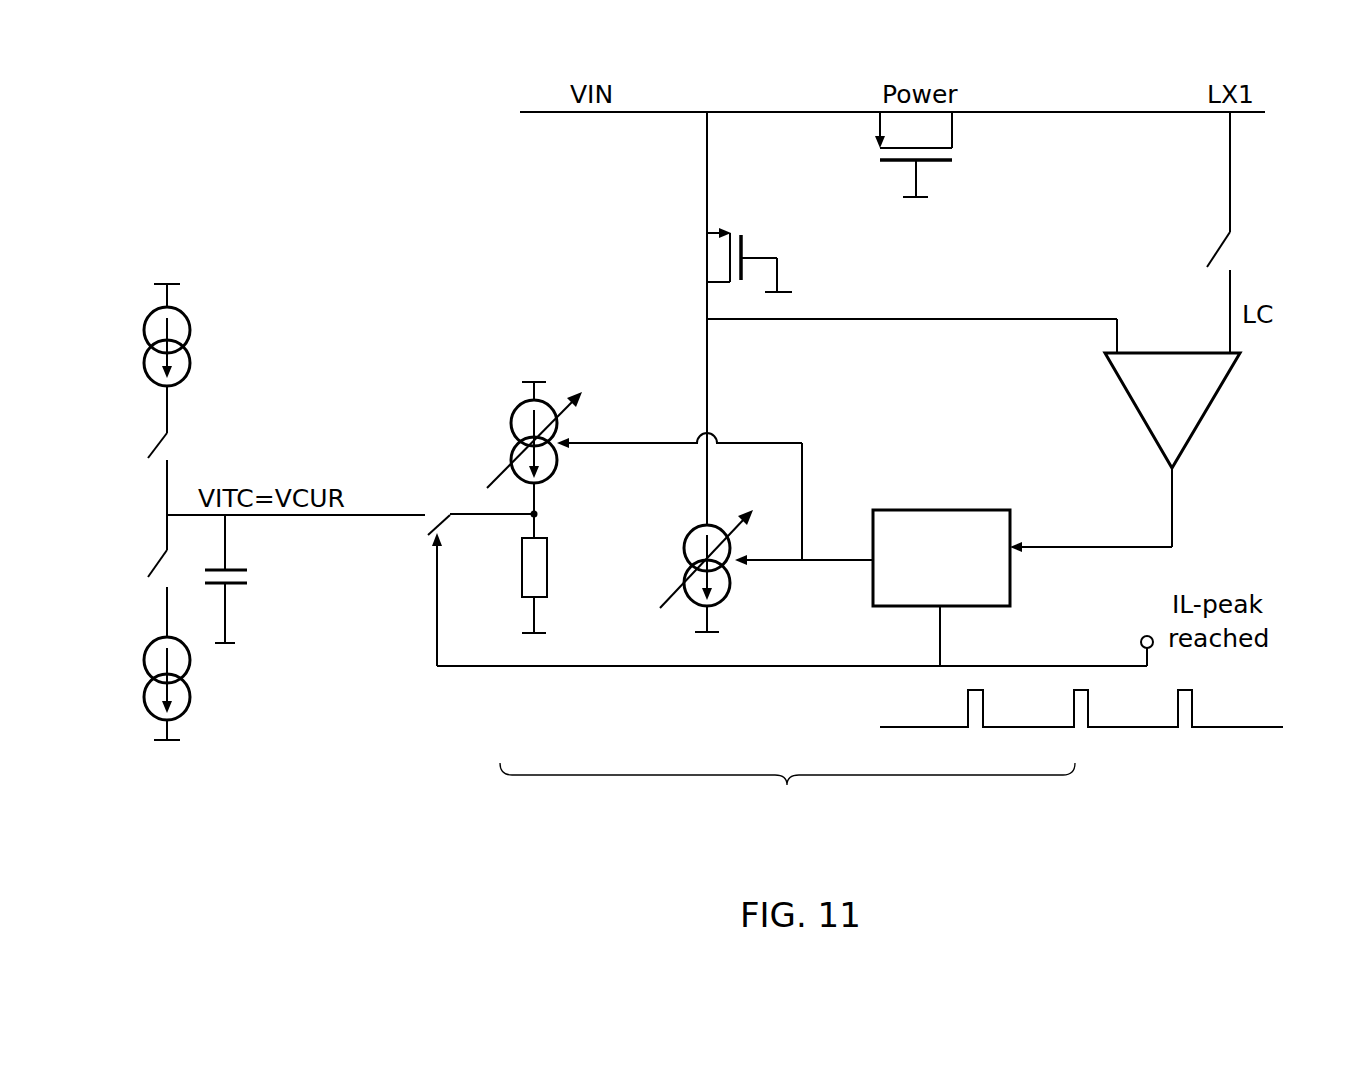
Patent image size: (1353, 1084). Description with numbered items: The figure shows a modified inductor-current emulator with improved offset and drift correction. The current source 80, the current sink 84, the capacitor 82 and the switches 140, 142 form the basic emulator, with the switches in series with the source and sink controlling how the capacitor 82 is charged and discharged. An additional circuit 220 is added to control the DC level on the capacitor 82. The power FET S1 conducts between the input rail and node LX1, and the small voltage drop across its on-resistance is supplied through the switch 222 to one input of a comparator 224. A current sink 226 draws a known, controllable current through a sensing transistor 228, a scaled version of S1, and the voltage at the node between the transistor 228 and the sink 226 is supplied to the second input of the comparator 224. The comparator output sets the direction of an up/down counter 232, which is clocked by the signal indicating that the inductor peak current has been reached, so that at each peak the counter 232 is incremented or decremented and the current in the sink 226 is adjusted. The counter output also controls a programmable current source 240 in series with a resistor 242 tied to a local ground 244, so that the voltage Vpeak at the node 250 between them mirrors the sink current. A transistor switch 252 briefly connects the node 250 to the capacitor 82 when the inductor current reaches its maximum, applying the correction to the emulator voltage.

The current source 80 is at (190, 332).
The switch 140 is at (155, 443).
The switch 142 is at (155, 560).
The capacitor 82 is at (247, 577).
The current sink 84 is at (190, 695).
The transistor switch 252 is at (436, 510).
The node 250 is at (527, 520).
The programmable current source 240 is at (512, 421).
The resistor 242 is at (522, 574).
The local ground 244 is at (534, 636).
The current sink 226 is at (690, 600).
The sensing transistor 228 is at (748, 237).
The up/down counter 232 is at (940, 508).
The comparator 224 is at (1213, 405).
The switch 222 is at (1238, 253).
The additional circuit 220 is at (789, 786).
The power FET S1 is at (952, 157).